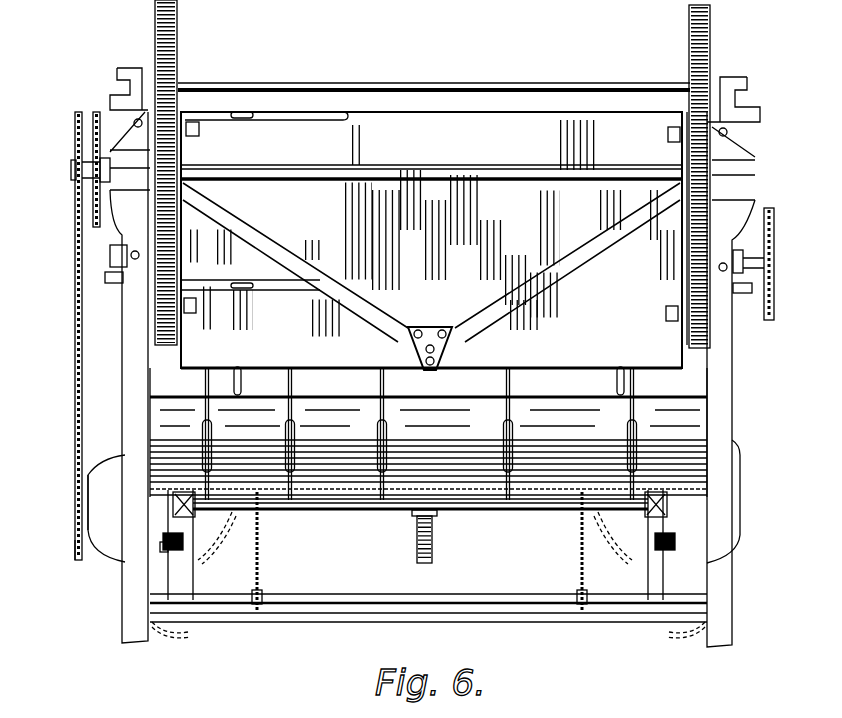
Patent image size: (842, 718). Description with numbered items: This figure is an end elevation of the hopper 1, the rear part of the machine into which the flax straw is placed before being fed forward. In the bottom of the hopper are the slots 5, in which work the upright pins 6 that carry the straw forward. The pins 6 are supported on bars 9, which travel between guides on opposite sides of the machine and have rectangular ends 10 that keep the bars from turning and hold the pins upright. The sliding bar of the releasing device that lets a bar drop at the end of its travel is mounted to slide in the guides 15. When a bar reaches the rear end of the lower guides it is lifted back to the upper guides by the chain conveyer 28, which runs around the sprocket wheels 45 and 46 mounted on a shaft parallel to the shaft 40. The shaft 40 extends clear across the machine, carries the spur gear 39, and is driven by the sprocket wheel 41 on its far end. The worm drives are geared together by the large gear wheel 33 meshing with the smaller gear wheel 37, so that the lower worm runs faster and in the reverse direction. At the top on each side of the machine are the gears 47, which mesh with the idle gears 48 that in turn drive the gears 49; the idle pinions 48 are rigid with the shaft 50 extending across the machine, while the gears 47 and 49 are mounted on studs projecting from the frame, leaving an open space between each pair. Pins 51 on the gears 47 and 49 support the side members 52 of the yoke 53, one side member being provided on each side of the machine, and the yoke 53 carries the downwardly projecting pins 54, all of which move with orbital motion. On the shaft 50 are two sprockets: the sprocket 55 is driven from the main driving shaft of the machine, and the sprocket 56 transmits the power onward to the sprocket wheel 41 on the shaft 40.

The hopper 1 is at (698, 386).
The slots 5 is at (212, 436).
The upright pins 6 is at (378, 462).
The bars 9 is at (333, 510).
The rectangular ends 10 is at (222, 525).
The guides 15 is at (175, 503).
The chain conveyer 28 is at (290, 540).
The gear wheel 33 is at (200, 558).
The gear wheel 37 is at (178, 630).
The spur gear 39 is at (432, 520).
The shaft 40 is at (90, 555).
The sprocket wheel 41 is at (70, 570).
The sprocket wheel 45 is at (258, 596).
The sprocket wheel 46 is at (577, 596).
The gears 47 is at (222, 35).
The idle gears 48 is at (180, 152).
The gears 49 is at (157, 293).
The shaft 50 is at (404, 168).
The pins 51 is at (203, 131).
The side members 52 is at (238, 214).
The yoke 53 is at (600, 353).
The downwardly projecting pins 54 is at (207, 392).
The sprocket 55 is at (97, 110).
The sprocket 56 is at (77, 150).